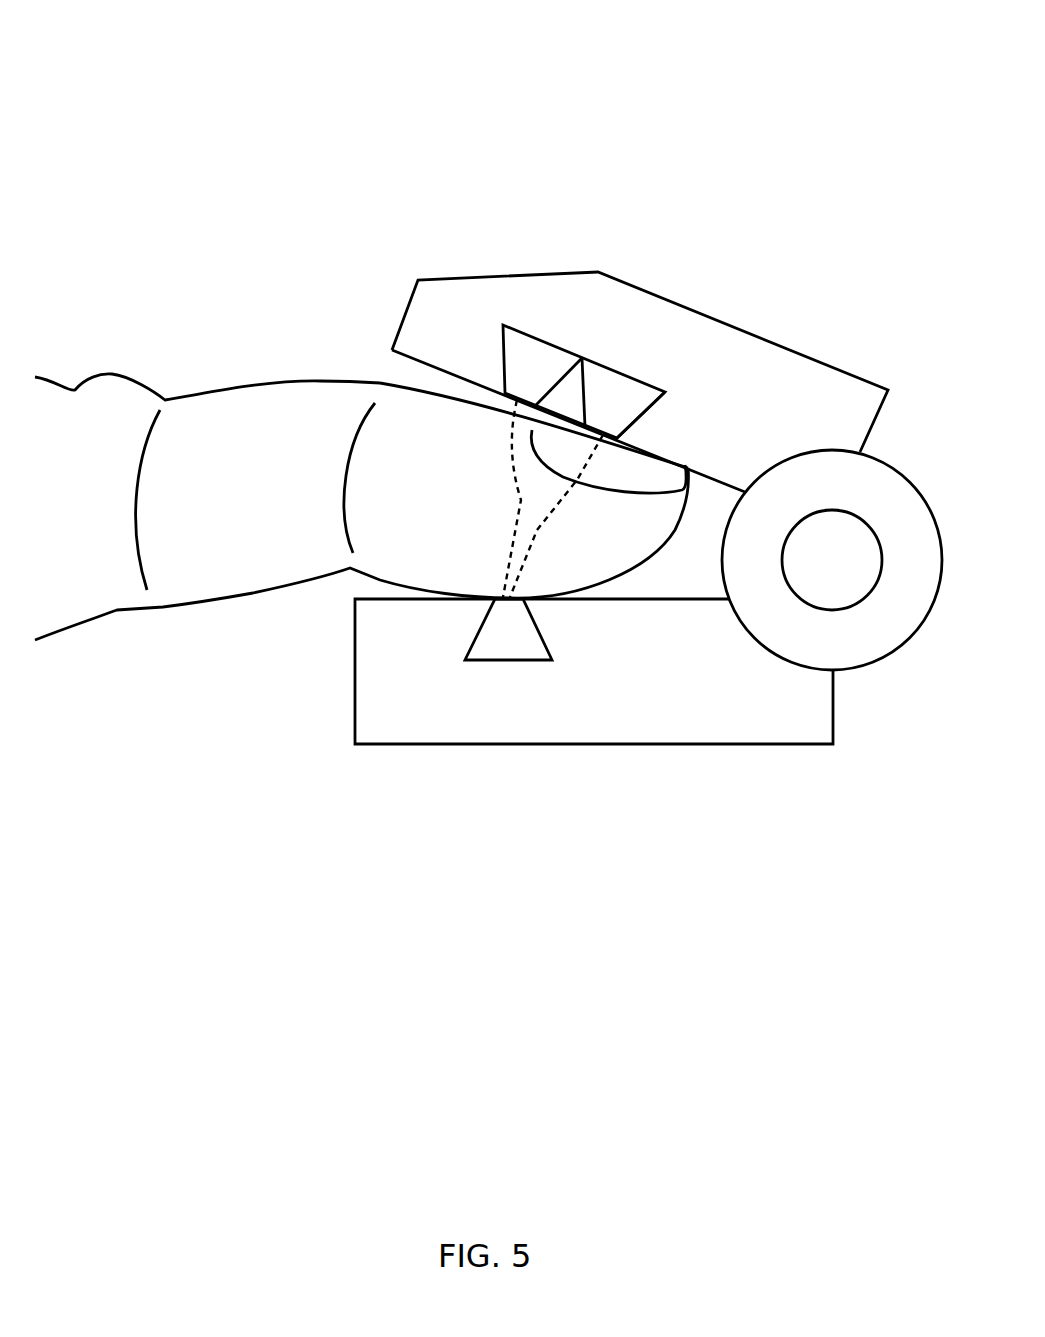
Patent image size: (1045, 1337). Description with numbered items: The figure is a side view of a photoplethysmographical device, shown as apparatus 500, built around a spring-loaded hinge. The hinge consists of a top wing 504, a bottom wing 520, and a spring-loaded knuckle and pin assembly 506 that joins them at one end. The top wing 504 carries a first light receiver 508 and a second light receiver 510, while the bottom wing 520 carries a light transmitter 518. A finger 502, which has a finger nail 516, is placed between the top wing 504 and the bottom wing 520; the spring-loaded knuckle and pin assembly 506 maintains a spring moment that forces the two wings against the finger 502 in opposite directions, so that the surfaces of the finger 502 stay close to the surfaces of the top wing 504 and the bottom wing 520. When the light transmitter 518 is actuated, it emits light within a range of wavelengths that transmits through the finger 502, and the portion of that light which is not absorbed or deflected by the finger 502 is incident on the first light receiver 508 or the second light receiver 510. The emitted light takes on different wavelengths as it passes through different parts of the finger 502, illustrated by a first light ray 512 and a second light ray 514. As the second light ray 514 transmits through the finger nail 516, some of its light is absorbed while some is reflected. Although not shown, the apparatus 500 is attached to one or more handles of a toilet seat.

The apparatus 500 is at (128, 72).
The finger 502 is at (210, 418).
The top wing 504 is at (680, 318).
The spring-loaded knuckle and pin assembly 506 is at (896, 480).
The first light receiver 508 is at (515, 358).
The second light receiver 510 is at (628, 402).
The first light ray 512 is at (518, 488).
The second light ray 514 is at (537, 528).
The finger nail 516 is at (614, 470).
The light transmitter 518 is at (507, 645).
The bottom wing 520 is at (372, 698).